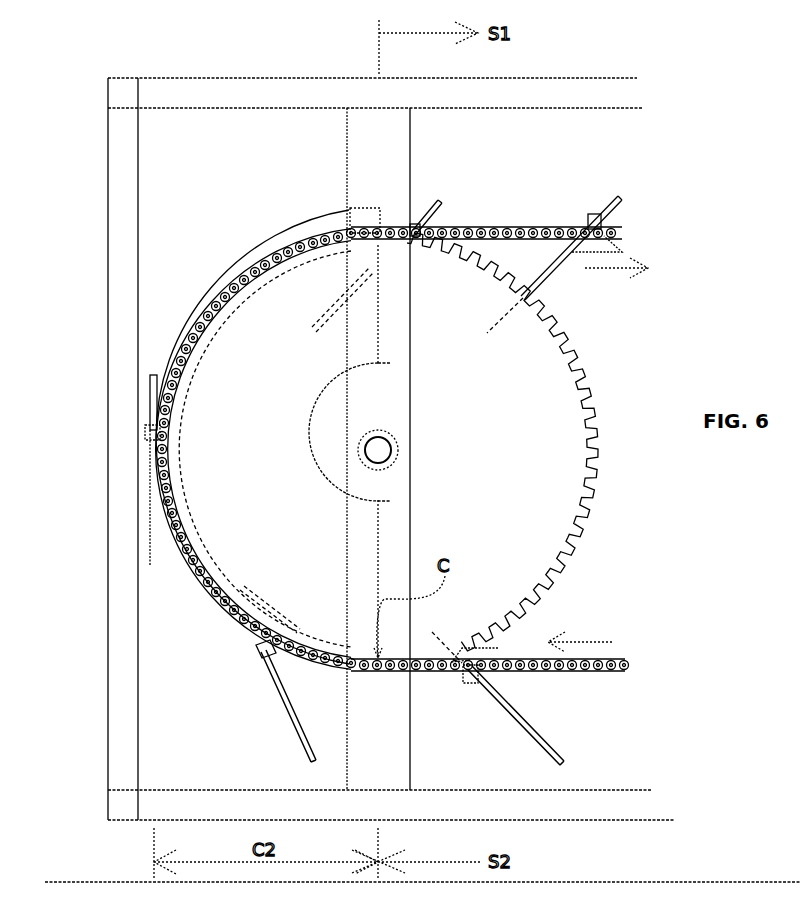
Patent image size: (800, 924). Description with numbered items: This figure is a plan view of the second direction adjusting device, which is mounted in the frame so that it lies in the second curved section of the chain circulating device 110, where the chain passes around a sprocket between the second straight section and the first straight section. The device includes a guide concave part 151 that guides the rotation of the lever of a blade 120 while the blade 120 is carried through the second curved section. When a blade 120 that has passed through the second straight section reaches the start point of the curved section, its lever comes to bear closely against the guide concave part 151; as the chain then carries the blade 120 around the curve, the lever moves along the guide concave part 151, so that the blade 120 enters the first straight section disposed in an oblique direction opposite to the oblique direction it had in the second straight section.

The chain circulating device 110 is at (597, 673).
The blade 120 is at (512, 725).
The guide concave part 151 is at (217, 268).